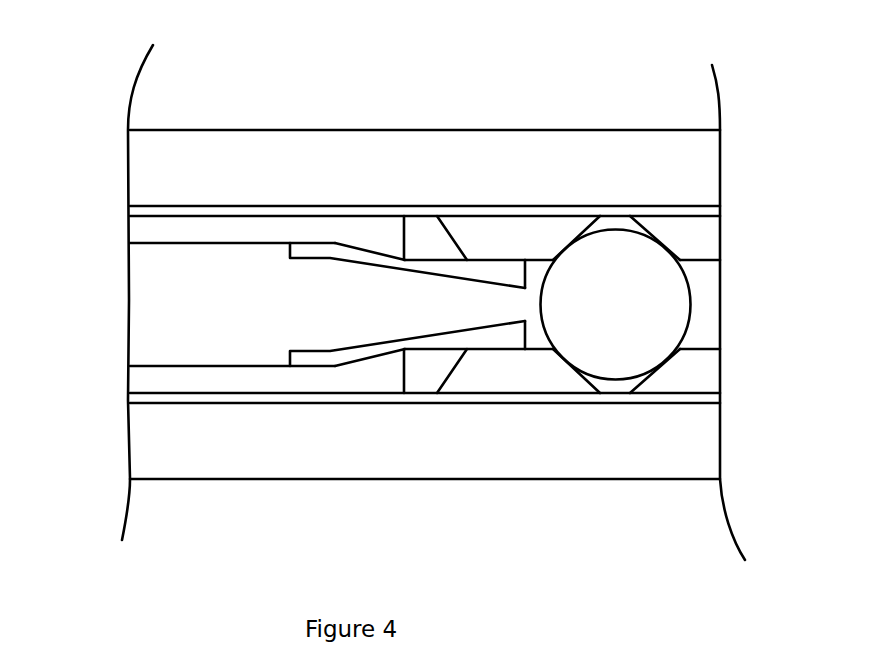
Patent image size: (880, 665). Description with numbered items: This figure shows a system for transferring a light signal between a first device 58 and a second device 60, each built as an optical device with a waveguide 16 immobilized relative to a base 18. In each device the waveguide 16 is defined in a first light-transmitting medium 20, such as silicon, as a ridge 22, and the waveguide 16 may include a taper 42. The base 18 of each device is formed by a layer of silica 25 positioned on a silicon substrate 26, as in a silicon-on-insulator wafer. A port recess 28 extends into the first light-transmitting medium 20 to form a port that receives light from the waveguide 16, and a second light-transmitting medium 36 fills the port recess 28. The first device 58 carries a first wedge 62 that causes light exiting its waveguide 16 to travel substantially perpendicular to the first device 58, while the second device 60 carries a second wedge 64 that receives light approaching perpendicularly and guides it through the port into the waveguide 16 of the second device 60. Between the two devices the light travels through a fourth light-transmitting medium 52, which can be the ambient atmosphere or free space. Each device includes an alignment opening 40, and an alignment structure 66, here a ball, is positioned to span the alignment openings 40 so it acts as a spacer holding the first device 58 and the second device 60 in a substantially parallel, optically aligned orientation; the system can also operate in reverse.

The waveguide 16 is at (102, 234).
The base 18 is at (757, 128).
The first light-transmitting medium 20 is at (702, 238).
The ridge 22 is at (167, 245).
The layer of silica 25 is at (268, 213).
The silicon substrate 26 is at (417, 153).
The port recess 28 is at (490, 232).
The second light-transmitting medium 36 is at (455, 368).
The alignment opening 40 is at (648, 233).
The taper 42 is at (347, 243).
The fourth light-transmitting medium 52 is at (418, 290).
The first device 58 is at (176, 502).
The second device 60 is at (262, 100).
The first wedge 62 is at (376, 325).
The second wedge 64 is at (494, 294).
The alignment structure 66 is at (690, 295).